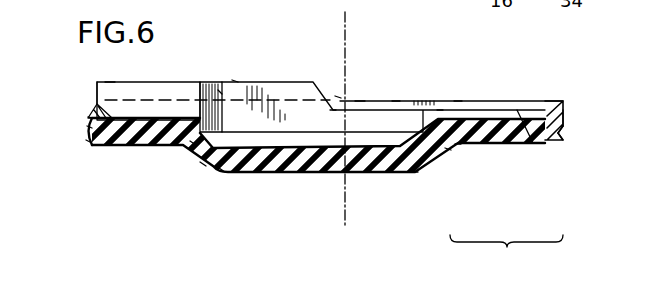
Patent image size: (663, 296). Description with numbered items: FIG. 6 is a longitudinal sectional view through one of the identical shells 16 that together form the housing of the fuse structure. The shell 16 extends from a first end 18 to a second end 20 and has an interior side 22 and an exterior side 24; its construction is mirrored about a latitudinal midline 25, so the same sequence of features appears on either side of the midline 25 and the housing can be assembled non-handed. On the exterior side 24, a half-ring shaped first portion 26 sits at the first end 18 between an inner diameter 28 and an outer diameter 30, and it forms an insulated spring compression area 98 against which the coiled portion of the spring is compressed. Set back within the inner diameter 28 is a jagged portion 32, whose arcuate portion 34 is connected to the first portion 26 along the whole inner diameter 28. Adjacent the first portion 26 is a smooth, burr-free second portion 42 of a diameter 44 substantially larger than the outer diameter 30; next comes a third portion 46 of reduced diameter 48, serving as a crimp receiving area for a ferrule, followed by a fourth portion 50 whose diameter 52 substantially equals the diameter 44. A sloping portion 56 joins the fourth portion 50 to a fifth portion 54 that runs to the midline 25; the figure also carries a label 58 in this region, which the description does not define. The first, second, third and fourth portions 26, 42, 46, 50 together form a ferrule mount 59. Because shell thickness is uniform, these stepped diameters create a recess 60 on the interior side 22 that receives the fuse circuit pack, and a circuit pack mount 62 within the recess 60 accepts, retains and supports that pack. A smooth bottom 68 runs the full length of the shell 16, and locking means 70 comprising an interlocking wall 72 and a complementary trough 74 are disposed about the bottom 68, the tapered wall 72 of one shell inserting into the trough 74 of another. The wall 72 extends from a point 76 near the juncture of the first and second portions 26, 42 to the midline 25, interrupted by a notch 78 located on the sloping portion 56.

The shell 16 is at (413, 172).
The first end 18 is at (86, 118).
The second end 20 is at (564, 135).
The interior side 22 is at (192, 143).
The exterior side 24 is at (273, 173).
The latitudinal midline 25 is at (350, 26).
The first portion 26 is at (86, 140).
The inner diameter 28 is at (88, 110).
The outer diameter 30 is at (97, 146).
The jagged portion 32 is at (88, 108).
The arcuate portion 34 is at (118, 72).
The second portion 42 is at (128, 147).
The diameter 44 is at (150, 147).
The third portion 46 is at (162, 118).
The diameter 48 is at (178, 148).
The fourth portion 50 is at (203, 165).
The diameter 52 is at (222, 170).
The fifth portion 54 is at (385, 173).
The sloping portion 56 is at (220, 93).
The floor 58 is at (300, 172).
The ferrule mount 59 is at (506, 256).
The recess 60 is at (358, 92).
The circuit pack mount 62 is at (195, 118).
The bottom 68 is at (396, 99).
The locking means 70 is at (338, 93).
The interlocking wall 72 is at (170, 80).
The trough 74 is at (458, 99).
The point 76 is at (332, 111).
The notch 78 is at (235, 80).
The insulated spring compression area 98 is at (87, 126).